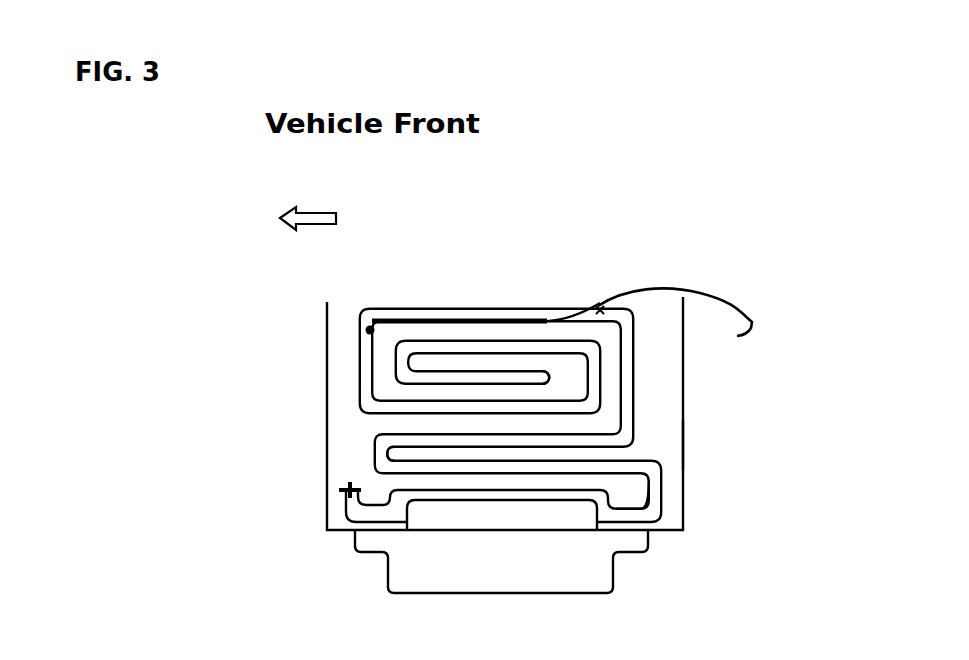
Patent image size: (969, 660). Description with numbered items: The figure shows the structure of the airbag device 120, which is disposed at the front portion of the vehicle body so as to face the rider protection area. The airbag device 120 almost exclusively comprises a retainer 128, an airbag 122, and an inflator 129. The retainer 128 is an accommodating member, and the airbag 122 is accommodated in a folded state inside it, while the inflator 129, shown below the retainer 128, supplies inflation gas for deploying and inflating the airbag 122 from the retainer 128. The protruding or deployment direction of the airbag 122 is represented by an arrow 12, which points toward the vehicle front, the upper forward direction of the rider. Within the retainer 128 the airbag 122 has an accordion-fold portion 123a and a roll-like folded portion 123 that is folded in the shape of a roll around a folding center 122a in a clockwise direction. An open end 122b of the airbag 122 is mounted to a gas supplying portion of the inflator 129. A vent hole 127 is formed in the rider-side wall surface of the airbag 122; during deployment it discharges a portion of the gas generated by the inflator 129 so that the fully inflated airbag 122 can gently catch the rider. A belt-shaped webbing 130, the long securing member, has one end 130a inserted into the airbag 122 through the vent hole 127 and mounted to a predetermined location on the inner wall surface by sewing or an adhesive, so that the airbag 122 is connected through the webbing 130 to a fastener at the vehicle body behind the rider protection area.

The arrow 12 is at (482, 238).
The airbag device 120 is at (711, 230).
The airbag 122 is at (662, 371).
The folding center 122a is at (545, 373).
The open end 122b is at (668, 504).
The roll-like folded portion 123 is at (352, 350).
The accordion-fold portion 123a is at (362, 452).
The vent hole 127 is at (600, 305).
The retainer 128 is at (686, 444).
The inflator 129 is at (629, 570).
The webbing 130 is at (712, 298).
The one end of the webbing 130a is at (366, 324).